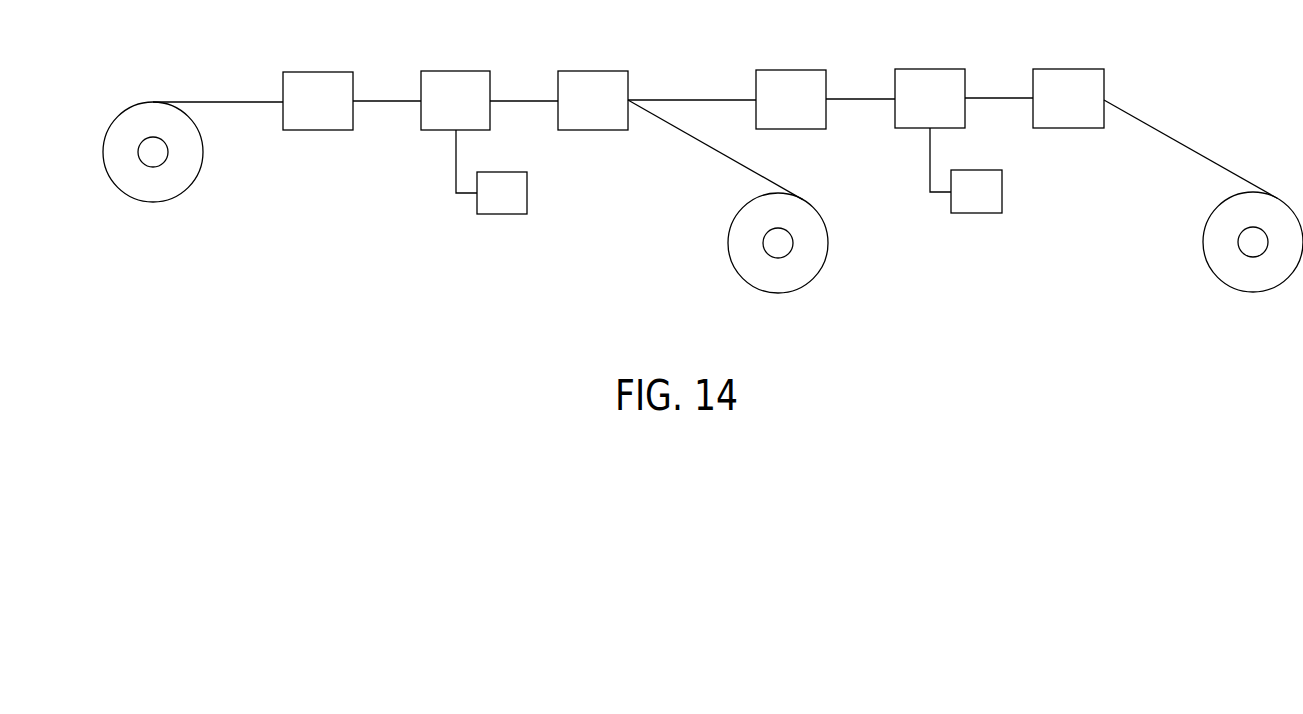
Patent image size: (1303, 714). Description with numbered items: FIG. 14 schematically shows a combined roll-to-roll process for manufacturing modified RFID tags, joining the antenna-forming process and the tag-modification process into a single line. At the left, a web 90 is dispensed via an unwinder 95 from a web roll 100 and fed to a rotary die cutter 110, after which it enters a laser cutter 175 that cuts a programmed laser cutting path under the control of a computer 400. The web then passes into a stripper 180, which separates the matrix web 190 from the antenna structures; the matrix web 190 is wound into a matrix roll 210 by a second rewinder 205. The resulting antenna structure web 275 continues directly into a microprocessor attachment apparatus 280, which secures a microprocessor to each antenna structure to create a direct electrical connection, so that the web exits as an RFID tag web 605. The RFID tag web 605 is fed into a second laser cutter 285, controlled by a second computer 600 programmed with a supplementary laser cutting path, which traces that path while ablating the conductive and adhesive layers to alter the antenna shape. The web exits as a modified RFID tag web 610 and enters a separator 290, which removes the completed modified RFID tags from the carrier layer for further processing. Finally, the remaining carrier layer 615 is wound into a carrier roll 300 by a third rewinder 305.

The web 90 is at (240, 101).
The unwinder 95 is at (162, 152).
The web roll 100 is at (152, 196).
The rotary die cutter 110 is at (318, 76).
The laser cutter 175 is at (456, 77).
The stripper 180 is at (596, 77).
The matrix web 190 is at (732, 162).
The second rewinder 205 is at (763, 243).
The matrix roll 210 is at (778, 288).
The antenna structure web 275 is at (710, 99).
The microprocessor attachment apparatus 280 is at (796, 76).
The second laser cutter 285 is at (936, 75).
The separator 290 is at (1071, 75).
The carrier roll 300 is at (1253, 287).
The third rewinder 305 is at (1238, 242).
The computer 400 is at (522, 190).
The second computer 600 is at (997, 190).
The RFID tag web 605 is at (855, 100).
The modified RFID tag web 610 is at (1008, 97).
The carrier layer 615 is at (1172, 138).